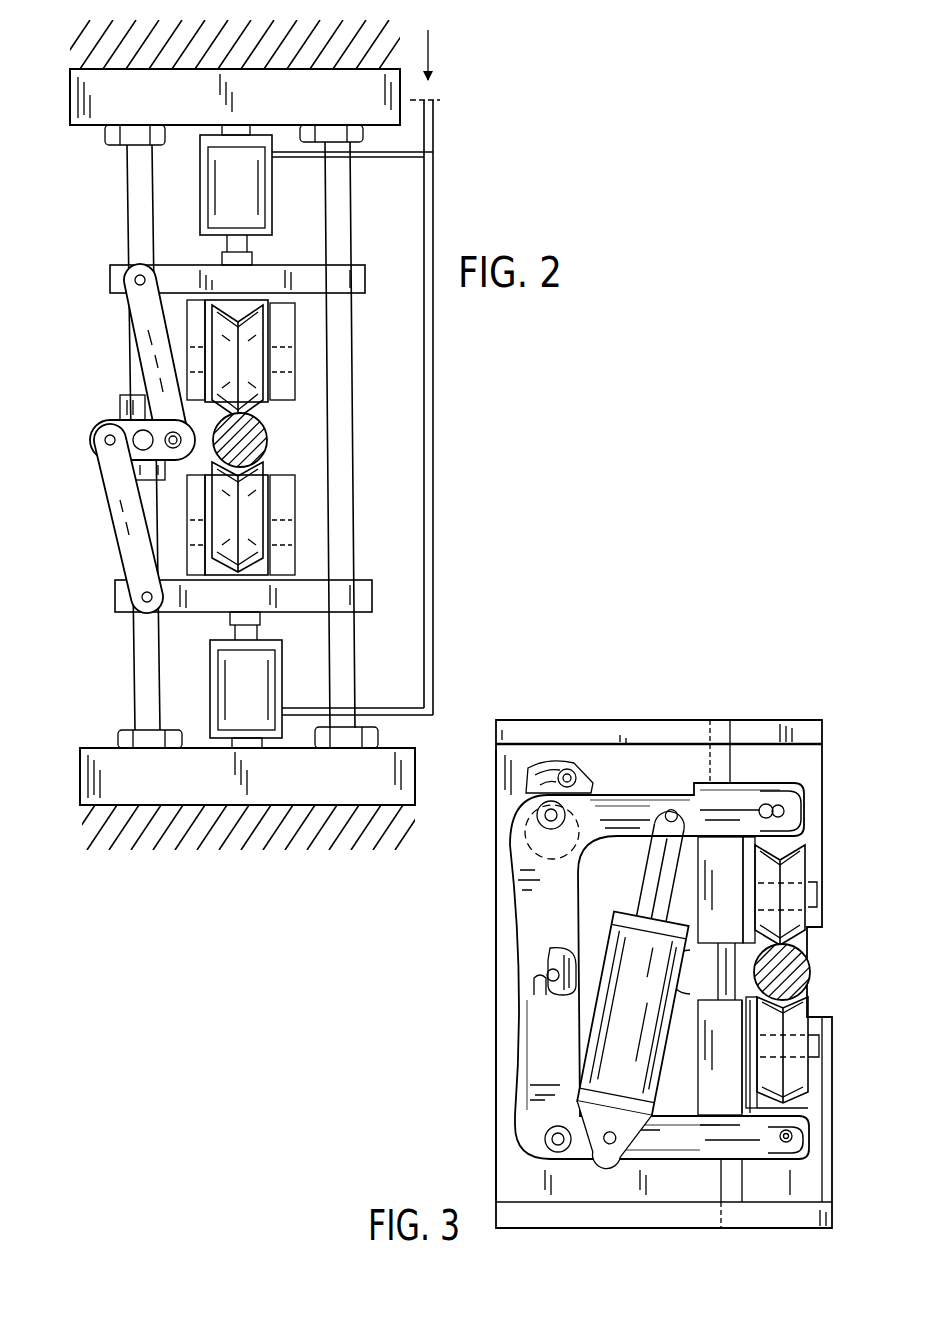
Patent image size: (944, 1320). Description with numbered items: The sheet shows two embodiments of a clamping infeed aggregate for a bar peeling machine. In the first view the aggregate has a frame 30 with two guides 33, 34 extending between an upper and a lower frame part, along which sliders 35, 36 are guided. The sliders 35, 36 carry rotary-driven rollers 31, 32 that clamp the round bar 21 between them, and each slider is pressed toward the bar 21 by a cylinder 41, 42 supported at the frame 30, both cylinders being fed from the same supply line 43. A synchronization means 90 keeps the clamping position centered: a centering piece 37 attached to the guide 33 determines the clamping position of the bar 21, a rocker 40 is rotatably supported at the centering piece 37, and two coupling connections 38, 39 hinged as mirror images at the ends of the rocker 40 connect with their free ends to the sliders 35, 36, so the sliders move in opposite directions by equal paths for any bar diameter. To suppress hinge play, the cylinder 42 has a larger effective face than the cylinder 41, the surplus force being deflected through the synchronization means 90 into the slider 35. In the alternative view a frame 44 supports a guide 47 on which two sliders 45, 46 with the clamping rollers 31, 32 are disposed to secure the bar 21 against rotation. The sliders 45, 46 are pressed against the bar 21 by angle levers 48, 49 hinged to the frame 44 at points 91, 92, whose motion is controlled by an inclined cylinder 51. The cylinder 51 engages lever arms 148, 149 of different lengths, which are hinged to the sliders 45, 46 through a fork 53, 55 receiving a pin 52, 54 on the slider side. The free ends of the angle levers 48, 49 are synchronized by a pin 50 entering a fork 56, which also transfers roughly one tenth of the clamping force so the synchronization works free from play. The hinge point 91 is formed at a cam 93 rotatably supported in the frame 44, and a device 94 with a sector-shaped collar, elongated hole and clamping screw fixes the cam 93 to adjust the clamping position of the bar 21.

In FIG. 2, the bar 21 is at (266, 443).
In FIG. 3, the bar 21 is at (800, 970).
In FIG. 2, the frame 30 is at (88, 101).
In FIG. 2, the roller 31 is at (258, 329).
In FIG. 3, the roller 31 is at (795, 873).
In FIG. 2, the roller 32 is at (258, 538).
In FIG. 3, the roller 32 is at (800, 1077).
In FIG. 2, the guide 33 is at (130, 213).
In FIG. 2, the guide 34 is at (340, 208).
In FIG. 2, the slider 35 is at (368, 273).
In FIG. 2, the slider 36 is at (372, 594).
In FIG. 2, the centering piece 37 is at (120, 407).
In FIG. 2, the coupling connection 38 is at (150, 338).
In FIG. 2, the coupling connection 39 is at (128, 537).
In FIG. 2, the rocker 40 is at (137, 457).
In FIG. 2, the cylinder 41 is at (255, 190).
In FIG. 2, the cylinder 42 is at (228, 673).
In FIG. 2, the supply line 43 is at (436, 130).
In FIG. 3, the frame 44 is at (498, 768).
In FIG. 3, the slider 45 is at (667, 876).
In FIG. 3, the slider 46 is at (718, 1083).
In FIG. 3, the guide 47 is at (712, 762).
In FIG. 3, the angle lever 48 is at (530, 880).
In FIG. 3, the angle lever 49 is at (530, 1083).
In FIG. 3, the pin 50 is at (548, 975).
In FIG. 3, the cylinder 51 is at (641, 1064).
In FIG. 3, the pin 52 is at (785, 811).
In FIG. 3, the fork 53 is at (800, 790).
In FIG. 3, the pin 54 is at (792, 1135).
In FIG. 3, the fork 55 is at (795, 1154).
In FIG. 3, the fork 56 is at (538, 990).
In FIG. 2, the synchronization means 90 is at (80, 440).
In FIG. 3, the hinged point 91 is at (535, 811).
In FIG. 3, the hinged point 92 is at (545, 1141).
In FIG. 3, the cam 93 is at (530, 843).
In FIG. 3, the device 94 is at (535, 735).
In FIG. 3, the lever arm 148 is at (640, 805).
In FIG. 3, the lever arm 149 is at (665, 1143).